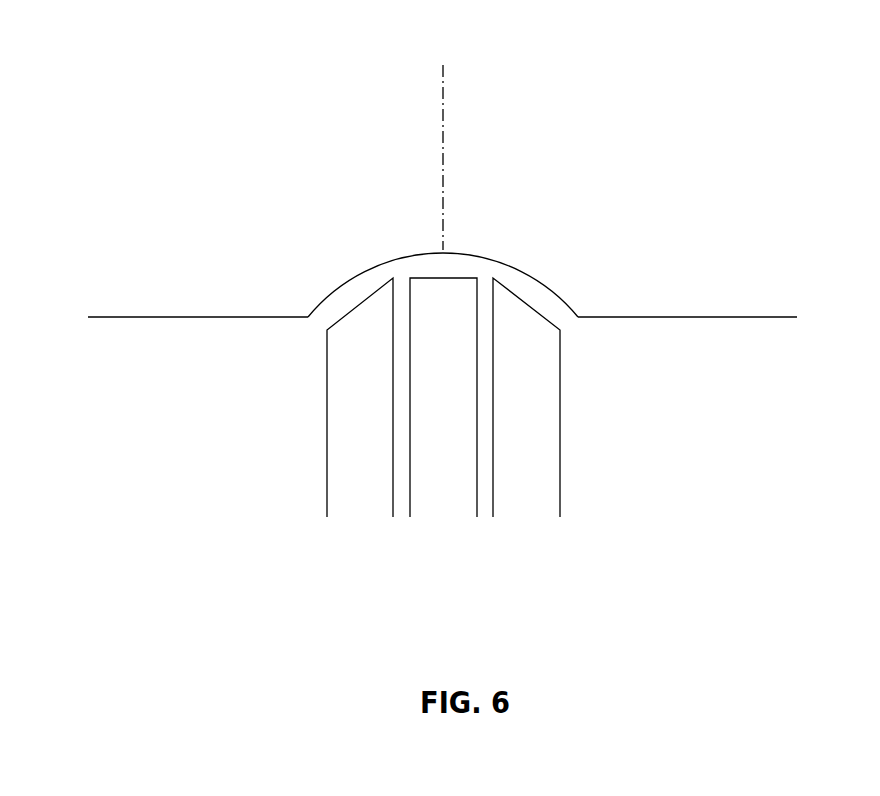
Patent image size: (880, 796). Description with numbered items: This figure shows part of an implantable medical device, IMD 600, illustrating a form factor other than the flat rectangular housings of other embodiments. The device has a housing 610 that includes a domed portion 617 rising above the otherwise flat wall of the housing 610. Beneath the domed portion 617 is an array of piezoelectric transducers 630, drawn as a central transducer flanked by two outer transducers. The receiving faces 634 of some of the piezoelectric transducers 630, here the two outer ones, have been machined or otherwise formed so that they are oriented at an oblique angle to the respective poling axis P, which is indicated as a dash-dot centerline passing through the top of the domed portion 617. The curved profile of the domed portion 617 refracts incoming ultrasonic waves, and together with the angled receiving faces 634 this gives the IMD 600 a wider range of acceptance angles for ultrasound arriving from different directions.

The IMD 600 is at (125, 58).
The housing 610 is at (713, 317).
The domed portion 617 is at (553, 285).
The piezoelectric transducers 630 is at (357, 513).
The receiving faces 634 is at (358, 305).
The poling axis P is at (443, 127).